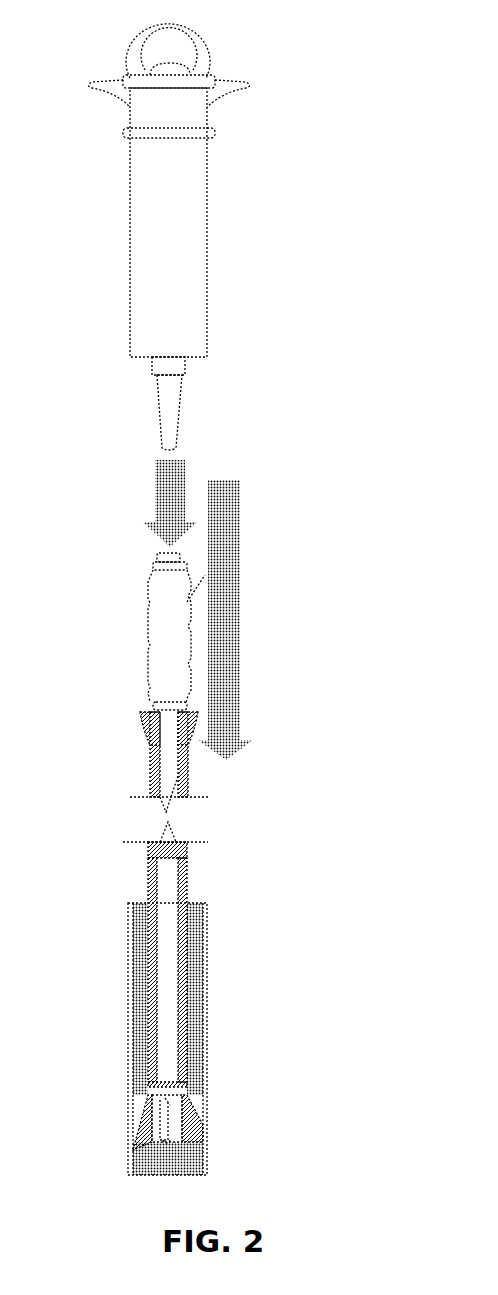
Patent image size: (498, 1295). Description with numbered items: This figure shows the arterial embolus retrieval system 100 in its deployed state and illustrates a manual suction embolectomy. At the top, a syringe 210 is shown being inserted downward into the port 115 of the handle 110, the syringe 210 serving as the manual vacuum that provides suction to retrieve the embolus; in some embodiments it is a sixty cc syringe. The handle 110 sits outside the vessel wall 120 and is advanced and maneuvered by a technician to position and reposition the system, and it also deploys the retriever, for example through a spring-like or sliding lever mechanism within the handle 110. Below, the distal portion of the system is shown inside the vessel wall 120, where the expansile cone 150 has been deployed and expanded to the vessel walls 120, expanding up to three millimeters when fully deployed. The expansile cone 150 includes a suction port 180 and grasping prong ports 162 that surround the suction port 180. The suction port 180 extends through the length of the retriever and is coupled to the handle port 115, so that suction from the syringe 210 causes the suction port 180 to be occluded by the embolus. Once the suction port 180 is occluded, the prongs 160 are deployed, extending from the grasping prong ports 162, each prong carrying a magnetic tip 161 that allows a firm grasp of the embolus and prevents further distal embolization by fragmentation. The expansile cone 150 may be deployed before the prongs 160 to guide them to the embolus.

The arterial embolus retrieval system 100 is at (208, 1013).
The handle 110 is at (148, 637).
The port 115 is at (172, 557).
The vessel wall 120 is at (128, 935).
The expansile cone 150 is at (192, 1124).
The prongs 160 is at (188, 1118).
The magnetic tip 161 is at (138, 1152).
The grasping prong ports 162 is at (153, 1108).
The suction port 180 is at (160, 1145).
The syringe 210 is at (207, 233).